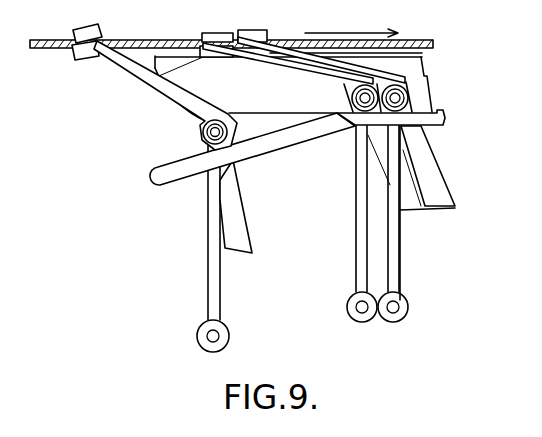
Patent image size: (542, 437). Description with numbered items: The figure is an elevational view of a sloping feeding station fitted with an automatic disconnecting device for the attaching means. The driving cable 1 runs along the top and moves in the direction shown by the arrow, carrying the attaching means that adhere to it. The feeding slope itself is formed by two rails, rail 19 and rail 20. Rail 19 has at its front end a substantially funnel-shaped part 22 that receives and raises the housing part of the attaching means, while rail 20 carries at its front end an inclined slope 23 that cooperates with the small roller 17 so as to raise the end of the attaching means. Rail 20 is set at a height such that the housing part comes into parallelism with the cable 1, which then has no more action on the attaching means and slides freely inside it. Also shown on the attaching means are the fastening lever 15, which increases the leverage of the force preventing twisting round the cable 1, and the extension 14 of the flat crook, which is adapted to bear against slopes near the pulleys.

The driving cable 1 is at (136, 40).
The rail 19 is at (257, 68).
The funnel-shaped part 22 is at (147, 80).
The small roller 17 is at (203, 135).
The inclined slope 23 is at (313, 134).
The rail 20 is at (437, 127).
The extension 14 is at (244, 222).
The fastening lever 15 is at (218, 279).